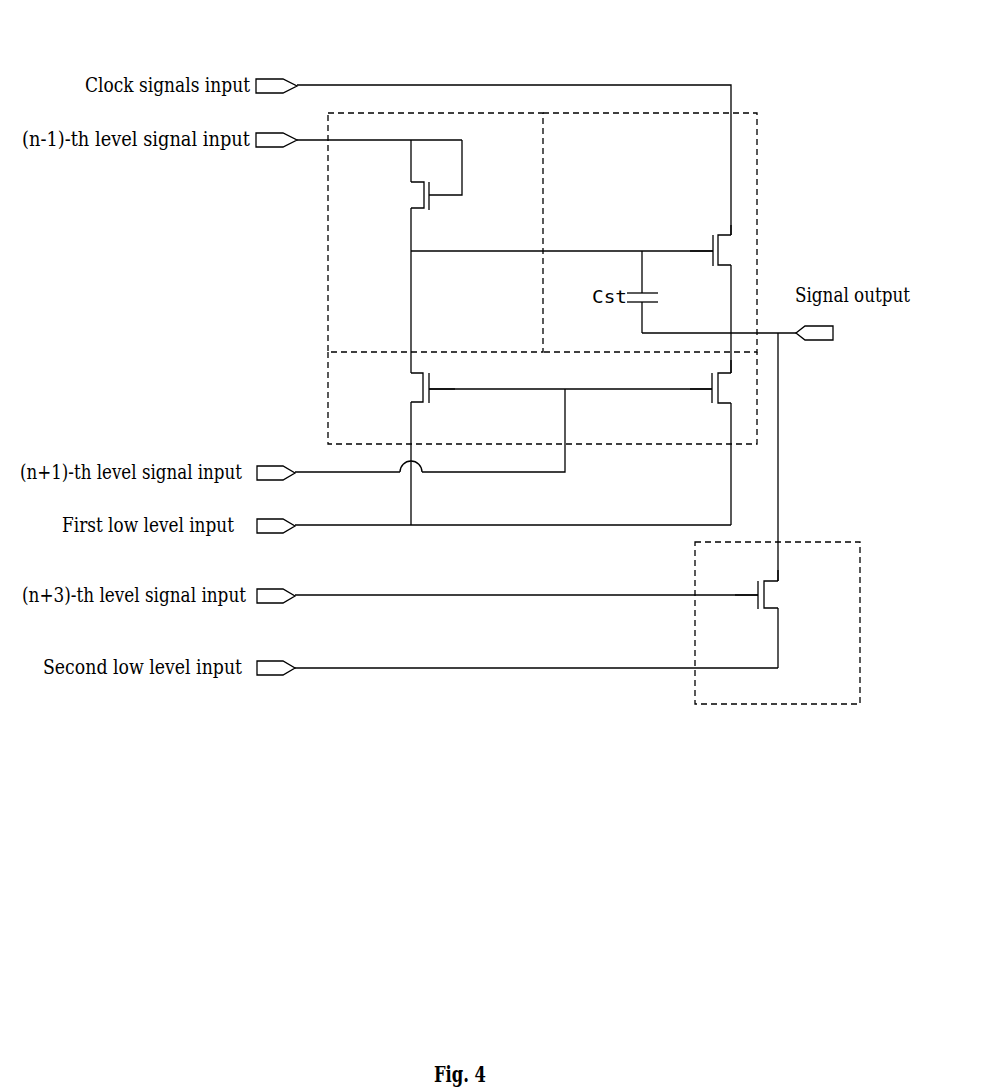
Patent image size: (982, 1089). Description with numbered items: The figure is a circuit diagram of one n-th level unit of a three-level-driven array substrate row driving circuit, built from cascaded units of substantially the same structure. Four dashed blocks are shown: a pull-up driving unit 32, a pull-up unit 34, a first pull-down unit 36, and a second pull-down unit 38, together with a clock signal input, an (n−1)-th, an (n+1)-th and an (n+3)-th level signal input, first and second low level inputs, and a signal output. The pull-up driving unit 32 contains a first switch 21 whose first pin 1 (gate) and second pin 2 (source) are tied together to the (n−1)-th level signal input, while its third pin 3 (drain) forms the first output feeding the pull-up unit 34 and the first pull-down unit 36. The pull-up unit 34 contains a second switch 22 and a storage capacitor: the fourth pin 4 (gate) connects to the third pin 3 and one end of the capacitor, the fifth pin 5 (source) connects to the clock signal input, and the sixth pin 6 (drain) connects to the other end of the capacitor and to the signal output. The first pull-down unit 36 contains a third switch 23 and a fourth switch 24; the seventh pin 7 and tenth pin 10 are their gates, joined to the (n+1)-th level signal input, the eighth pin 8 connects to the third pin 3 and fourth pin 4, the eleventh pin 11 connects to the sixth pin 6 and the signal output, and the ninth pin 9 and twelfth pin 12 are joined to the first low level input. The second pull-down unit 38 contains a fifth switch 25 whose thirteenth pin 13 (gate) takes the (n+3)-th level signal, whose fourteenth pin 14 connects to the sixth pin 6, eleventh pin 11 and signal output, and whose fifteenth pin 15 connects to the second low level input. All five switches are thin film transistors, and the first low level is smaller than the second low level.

The first pin 1 is at (445, 179).
The second pin 2 is at (401, 162).
The third pin 3 is at (419, 229).
The fourth pin 4 is at (701, 263).
The fifth pin 5 is at (740, 236).
The sixth pin 6 is at (740, 316).
The seventh pin 7 is at (442, 400).
The eighth pin 8 is at (401, 314).
The ninth pin 9 is at (419, 463).
The tenth pin 10 is at (702, 376).
The eleventh pin 11 is at (743, 372).
The twelfth pin 12 is at (743, 461).
The thirteenth pin 13 is at (744, 581).
The fourteenth pin 14 is at (792, 582).
The fifteenth pin 15 is at (792, 637).
The first switch 21 is at (406, 204).
The second switch 22 is at (716, 275).
The third switch 23 is at (402, 388).
The fourth switch 24 is at (694, 442).
The fifth switch 25 is at (730, 618).
The pull-up driving unit 32 is at (438, 113).
The pull-up unit 34 is at (650, 113).
The first pull-down unit 36 is at (757, 408).
The second pull-down unit 38 is at (820, 542).